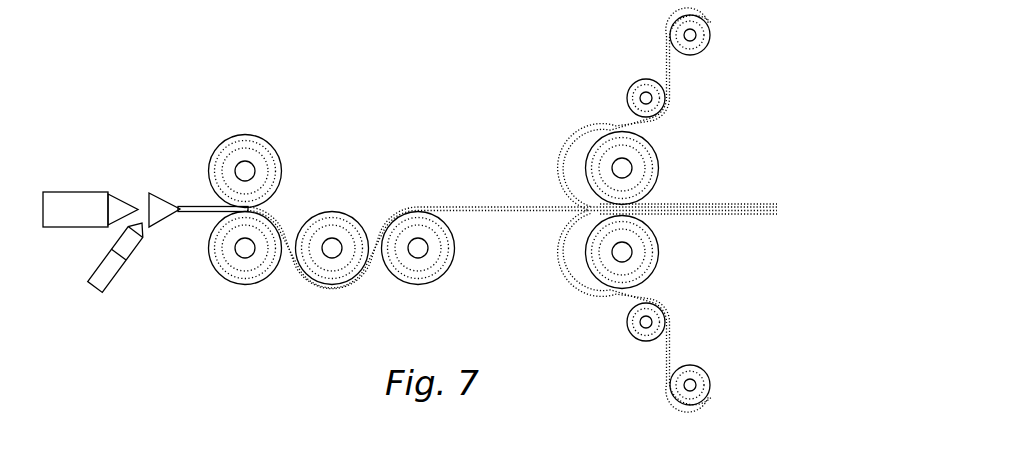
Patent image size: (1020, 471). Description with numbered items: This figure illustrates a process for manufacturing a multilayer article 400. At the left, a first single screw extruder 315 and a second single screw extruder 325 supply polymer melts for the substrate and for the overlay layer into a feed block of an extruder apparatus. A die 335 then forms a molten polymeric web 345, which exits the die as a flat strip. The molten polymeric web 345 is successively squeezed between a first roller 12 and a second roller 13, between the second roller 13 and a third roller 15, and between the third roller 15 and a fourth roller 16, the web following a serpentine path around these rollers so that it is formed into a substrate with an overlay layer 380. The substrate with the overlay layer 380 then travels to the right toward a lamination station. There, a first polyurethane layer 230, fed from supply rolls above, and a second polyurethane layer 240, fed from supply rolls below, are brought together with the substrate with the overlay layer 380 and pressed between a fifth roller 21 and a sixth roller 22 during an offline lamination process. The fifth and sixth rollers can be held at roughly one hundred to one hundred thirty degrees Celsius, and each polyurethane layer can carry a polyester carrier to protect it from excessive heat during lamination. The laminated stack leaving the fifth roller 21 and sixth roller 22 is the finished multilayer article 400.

The first roller 12 is at (267, 139).
The second roller 13 is at (249, 285).
The third roller 15 is at (327, 212).
The fourth roller 16 is at (420, 285).
The fifth roller 21 is at (660, 153).
The sixth roller 22 is at (657, 267).
The first polyurethane layer 230 is at (673, 68).
The second polyurethane layer 240 is at (670, 343).
The first single screw extruder 315 is at (72, 200).
The second single screw extruder 325 is at (113, 252).
The die 335 is at (164, 203).
The molten polymeric web 345 is at (199, 213).
The substrate with an overlay layer 380 is at (515, 206).
The multilayer article 400 is at (726, 194).